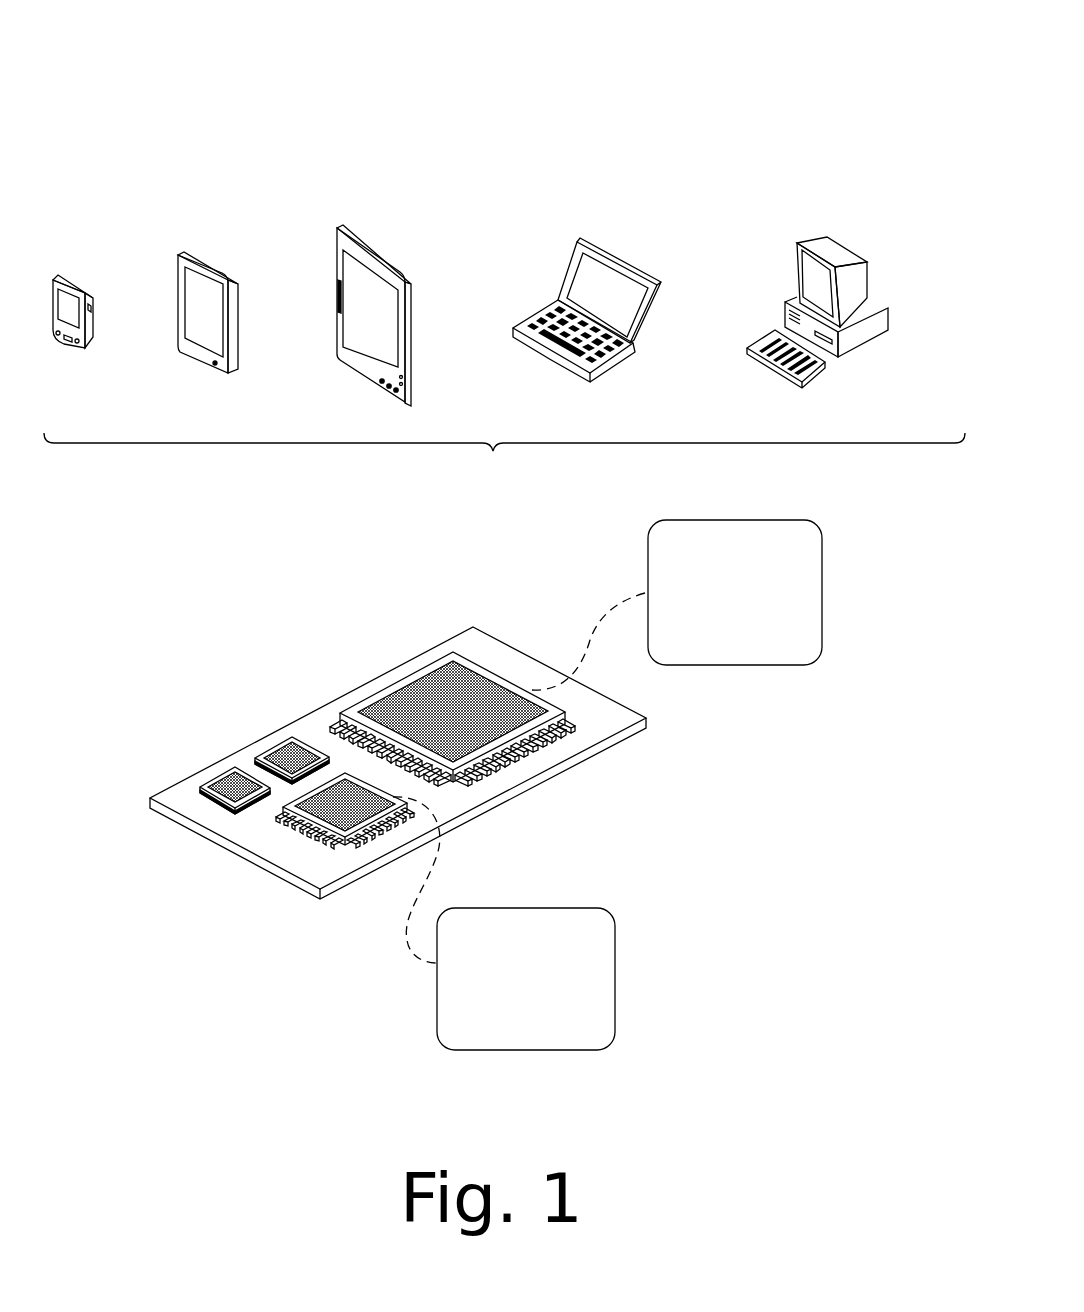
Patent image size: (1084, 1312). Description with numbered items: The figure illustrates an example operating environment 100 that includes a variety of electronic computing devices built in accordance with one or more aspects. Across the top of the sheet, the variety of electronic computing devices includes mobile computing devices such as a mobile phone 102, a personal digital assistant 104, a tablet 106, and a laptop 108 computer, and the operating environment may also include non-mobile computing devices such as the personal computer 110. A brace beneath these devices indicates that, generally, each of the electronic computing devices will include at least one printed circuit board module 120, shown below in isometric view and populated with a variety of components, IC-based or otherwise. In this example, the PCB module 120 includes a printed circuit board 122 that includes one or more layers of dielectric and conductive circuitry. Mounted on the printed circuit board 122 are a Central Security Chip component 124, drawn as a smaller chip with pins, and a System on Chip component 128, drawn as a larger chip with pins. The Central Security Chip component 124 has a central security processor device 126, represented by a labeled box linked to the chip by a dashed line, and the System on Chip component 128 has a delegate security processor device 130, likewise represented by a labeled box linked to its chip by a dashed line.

The operating environment 100 is at (219, 52).
The mobile phone 102 is at (63, 275).
The personal digital assistant 104 is at (193, 256).
The tablet 106 is at (367, 250).
The laptop computer 108 is at (587, 248).
The personal computer 110 is at (833, 246).
The printed circuit board module 120 is at (580, 788).
The printed circuit board 122 is at (455, 635).
The Central Security Chip component 124 is at (317, 835).
The central security processor device 126 is at (504, 923).
The System on Chip component 128 is at (477, 667).
The delegate security processor device 130 is at (677, 605).